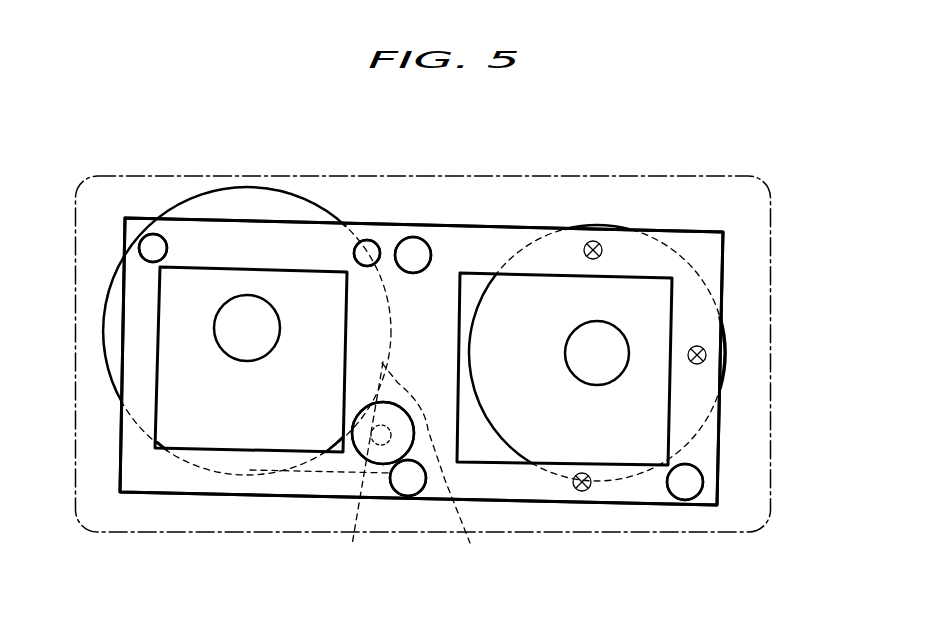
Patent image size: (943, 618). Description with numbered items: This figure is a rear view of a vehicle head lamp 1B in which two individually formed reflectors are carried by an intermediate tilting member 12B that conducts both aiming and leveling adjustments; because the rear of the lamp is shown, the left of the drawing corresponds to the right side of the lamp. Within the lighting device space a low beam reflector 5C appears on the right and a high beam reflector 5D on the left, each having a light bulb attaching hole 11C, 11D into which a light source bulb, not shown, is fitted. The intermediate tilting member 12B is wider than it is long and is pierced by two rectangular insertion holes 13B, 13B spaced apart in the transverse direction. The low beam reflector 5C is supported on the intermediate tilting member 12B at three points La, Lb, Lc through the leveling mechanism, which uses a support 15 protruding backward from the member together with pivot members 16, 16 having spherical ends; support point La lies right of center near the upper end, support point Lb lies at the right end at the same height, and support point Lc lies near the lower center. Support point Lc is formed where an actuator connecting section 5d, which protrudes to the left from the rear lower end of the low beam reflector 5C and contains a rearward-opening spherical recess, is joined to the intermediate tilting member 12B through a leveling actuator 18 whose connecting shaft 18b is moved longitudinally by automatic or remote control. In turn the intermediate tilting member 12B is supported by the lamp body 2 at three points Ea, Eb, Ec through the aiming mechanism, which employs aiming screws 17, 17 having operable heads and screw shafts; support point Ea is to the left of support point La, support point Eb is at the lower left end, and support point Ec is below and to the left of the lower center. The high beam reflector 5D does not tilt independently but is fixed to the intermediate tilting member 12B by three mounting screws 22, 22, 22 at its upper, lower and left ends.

The head lamp 1B is at (680, 165).
The lamp body 2 is at (720, 181).
The low beam reflector 5C is at (303, 197).
The high beam reflector 5D is at (587, 223).
The actuator connecting section 5d is at (370, 467).
The light bulb attaching hole 11C is at (257, 358).
The light bulb attaching hole 11D is at (598, 386).
The intermediate tilting member 12B is at (503, 243).
The rectangular insertion hole 13B is at (212, 438).
The support 15 is at (400, 490).
The pivot member 16 is at (153, 234).
The aiming screw 17 is at (415, 238).
The leveling actuator 18 is at (390, 408).
The connecting shaft 18b is at (357, 466).
The mounting screw 22 is at (600, 242).
The support point La is at (376, 243).
The support point Lb is at (165, 238).
The support point Lc is at (358, 458).
The support point Ea is at (428, 240).
The support point Eb is at (675, 500).
The support point Ec is at (423, 498).